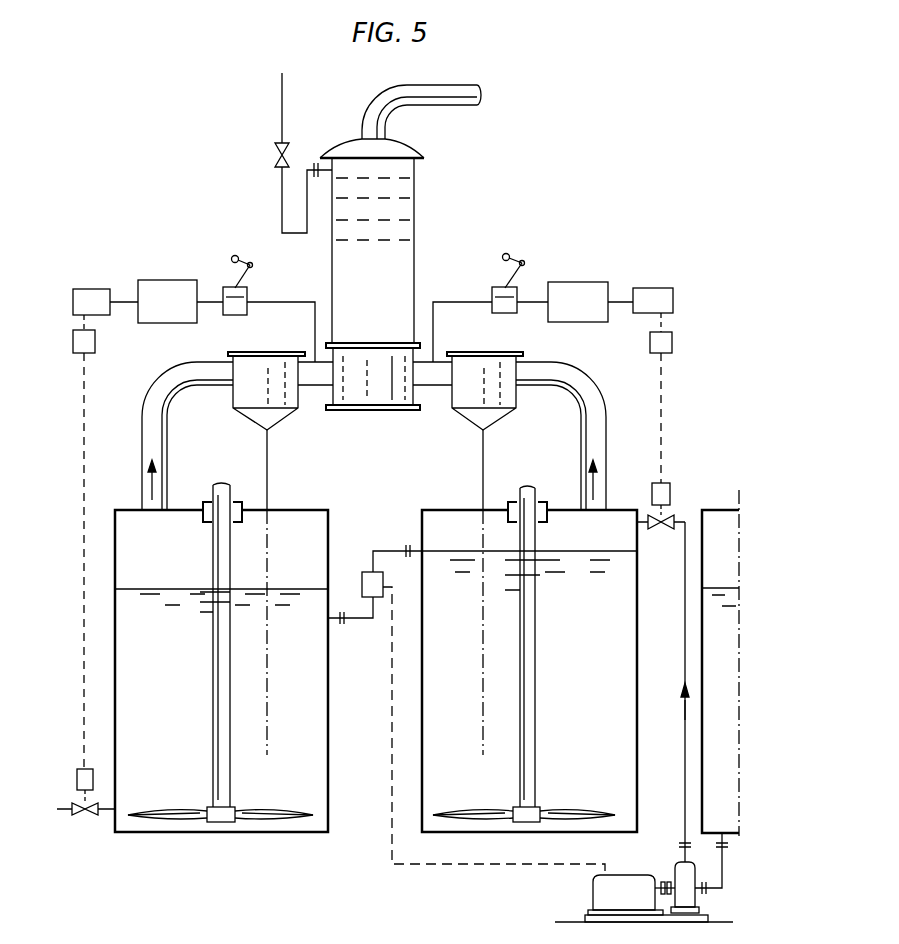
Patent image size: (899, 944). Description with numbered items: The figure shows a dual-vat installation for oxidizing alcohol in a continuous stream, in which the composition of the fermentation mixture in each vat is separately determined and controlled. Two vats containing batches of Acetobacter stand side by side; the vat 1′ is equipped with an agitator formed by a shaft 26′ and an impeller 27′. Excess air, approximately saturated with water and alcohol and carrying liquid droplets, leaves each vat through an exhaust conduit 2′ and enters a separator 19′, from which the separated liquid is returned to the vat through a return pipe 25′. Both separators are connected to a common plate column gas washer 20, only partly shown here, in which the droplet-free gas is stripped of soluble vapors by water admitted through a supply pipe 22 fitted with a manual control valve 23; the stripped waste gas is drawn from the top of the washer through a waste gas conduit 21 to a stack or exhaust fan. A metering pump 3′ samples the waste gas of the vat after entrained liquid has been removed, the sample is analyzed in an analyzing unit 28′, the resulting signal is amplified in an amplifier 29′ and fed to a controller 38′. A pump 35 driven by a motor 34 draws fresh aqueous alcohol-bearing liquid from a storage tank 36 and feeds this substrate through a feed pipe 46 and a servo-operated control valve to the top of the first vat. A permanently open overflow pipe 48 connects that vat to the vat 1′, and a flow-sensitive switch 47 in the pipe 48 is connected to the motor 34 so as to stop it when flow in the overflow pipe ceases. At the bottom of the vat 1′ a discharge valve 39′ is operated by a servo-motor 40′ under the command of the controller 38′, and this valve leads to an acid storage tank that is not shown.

The plate column gas washer 20 is at (416, 230).
The waste gas conduit 21 is at (461, 98).
The supply pipe 22 is at (280, 82).
The manual control valve 23 is at (275, 151).
The separator 19′ is at (255, 390).
The exhaust conduit 2′ is at (150, 392).
The metering pump 3′ is at (237, 306).
The analyzing unit 28′ is at (167, 301).
The amplifier 29′ is at (91, 302).
The controller 38′ is at (97, 345).
The servo-motor 40′ is at (77, 777).
The discharge valve 39′ is at (85, 815).
The vat 1′ is at (328, 752).
The return pipe 25′ is at (268, 478).
The agitator 26′ is at (218, 684).
The agitator 27′ is at (172, 811).
The flow-sensitive switch 47 is at (368, 583).
The overflow pipe 48 is at (390, 551).
The feed pipe 46 is at (683, 659).
The storage tank 36 is at (705, 620).
The pump 35 is at (686, 870).
The motor 34 is at (644, 898).